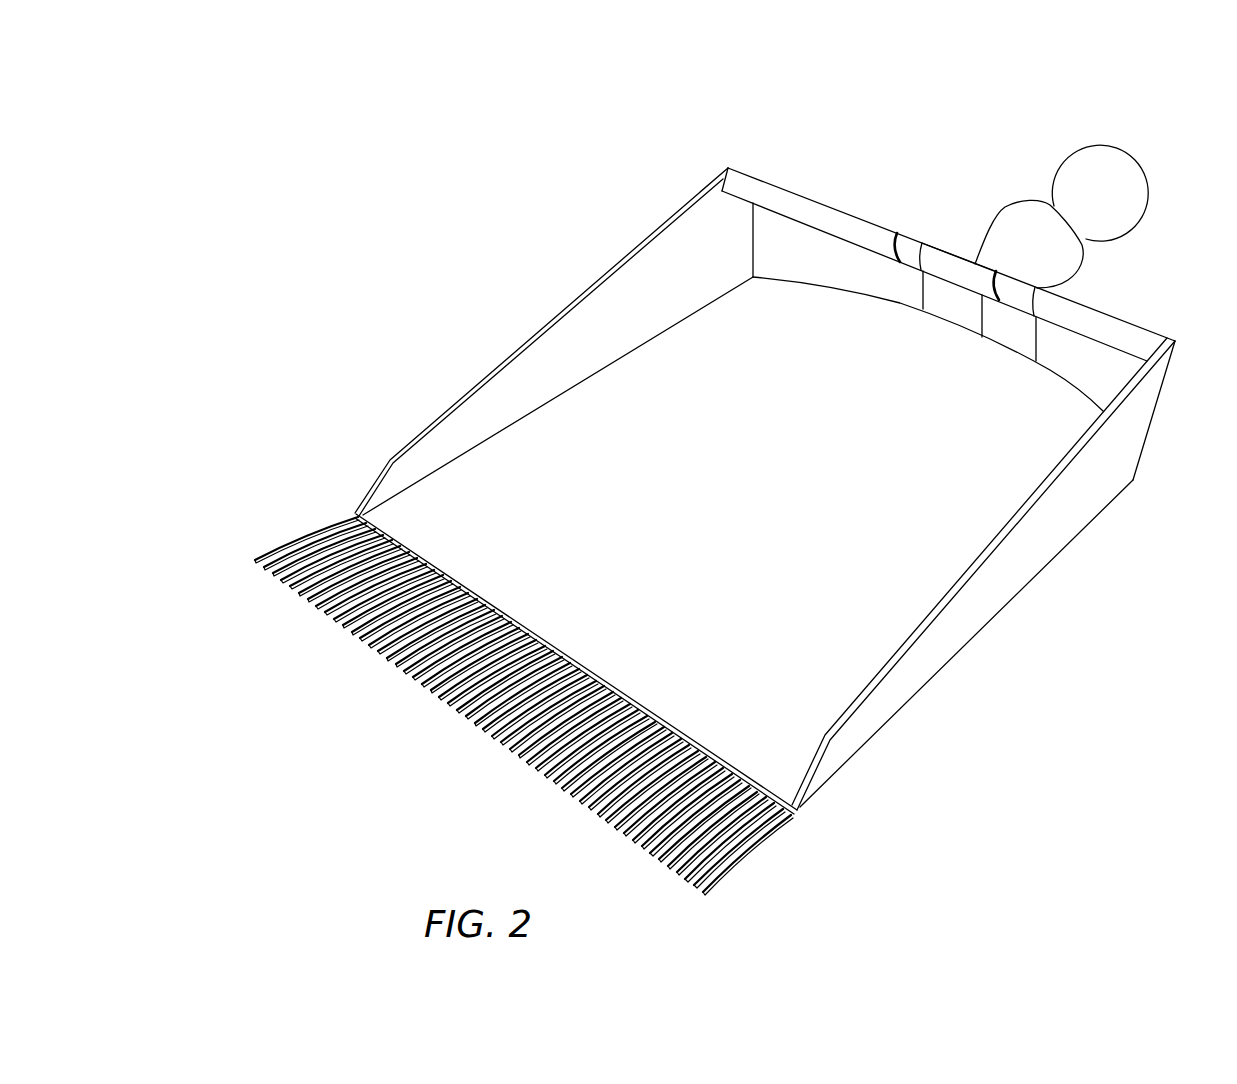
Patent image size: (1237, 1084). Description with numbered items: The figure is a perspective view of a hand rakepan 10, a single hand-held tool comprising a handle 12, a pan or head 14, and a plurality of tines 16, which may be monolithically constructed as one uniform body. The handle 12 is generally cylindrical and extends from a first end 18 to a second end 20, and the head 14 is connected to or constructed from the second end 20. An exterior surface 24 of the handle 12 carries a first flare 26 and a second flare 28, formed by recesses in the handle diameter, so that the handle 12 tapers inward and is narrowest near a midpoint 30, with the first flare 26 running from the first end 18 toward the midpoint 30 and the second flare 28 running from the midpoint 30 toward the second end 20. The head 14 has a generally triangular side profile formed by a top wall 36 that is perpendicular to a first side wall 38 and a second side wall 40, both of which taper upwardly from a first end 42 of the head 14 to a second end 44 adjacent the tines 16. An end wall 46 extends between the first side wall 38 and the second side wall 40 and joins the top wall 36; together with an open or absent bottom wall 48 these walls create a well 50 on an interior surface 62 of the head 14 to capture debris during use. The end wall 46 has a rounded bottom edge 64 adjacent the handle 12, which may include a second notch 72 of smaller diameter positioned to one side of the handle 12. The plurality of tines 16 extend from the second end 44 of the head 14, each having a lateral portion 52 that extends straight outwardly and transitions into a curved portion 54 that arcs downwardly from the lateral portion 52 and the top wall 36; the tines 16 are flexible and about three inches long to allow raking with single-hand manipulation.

The hand rakepan 10 is at (258, 213).
The handle 12 is at (1030, 148).
The head 14 is at (516, 252).
The plurality of tines 16 is at (345, 740).
The first end 18 is at (1100, 145).
The second end 20 is at (1027, 287).
The exterior surface 24 is at (1090, 199).
The first flare 26 is at (1107, 243).
The second flare 28 is at (977, 245).
The midpoint 30 is at (1003, 208).
The top wall 36 is at (870, 627).
The first side wall 38 is at (1017, 577).
The second side wall 40 is at (503, 352).
The first end 42 is at (803, 282).
The second end 44 is at (775, 808).
The end wall 46 is at (1115, 370).
The bottom wall 48 is at (620, 196).
The well 50 is at (985, 455).
The lateral portion 52 is at (753, 860).
The curved portion 54 is at (707, 891).
The interior surface 62 is at (470, 471).
The bottom edge 64 is at (833, 210).
The second notch 72 is at (917, 238).